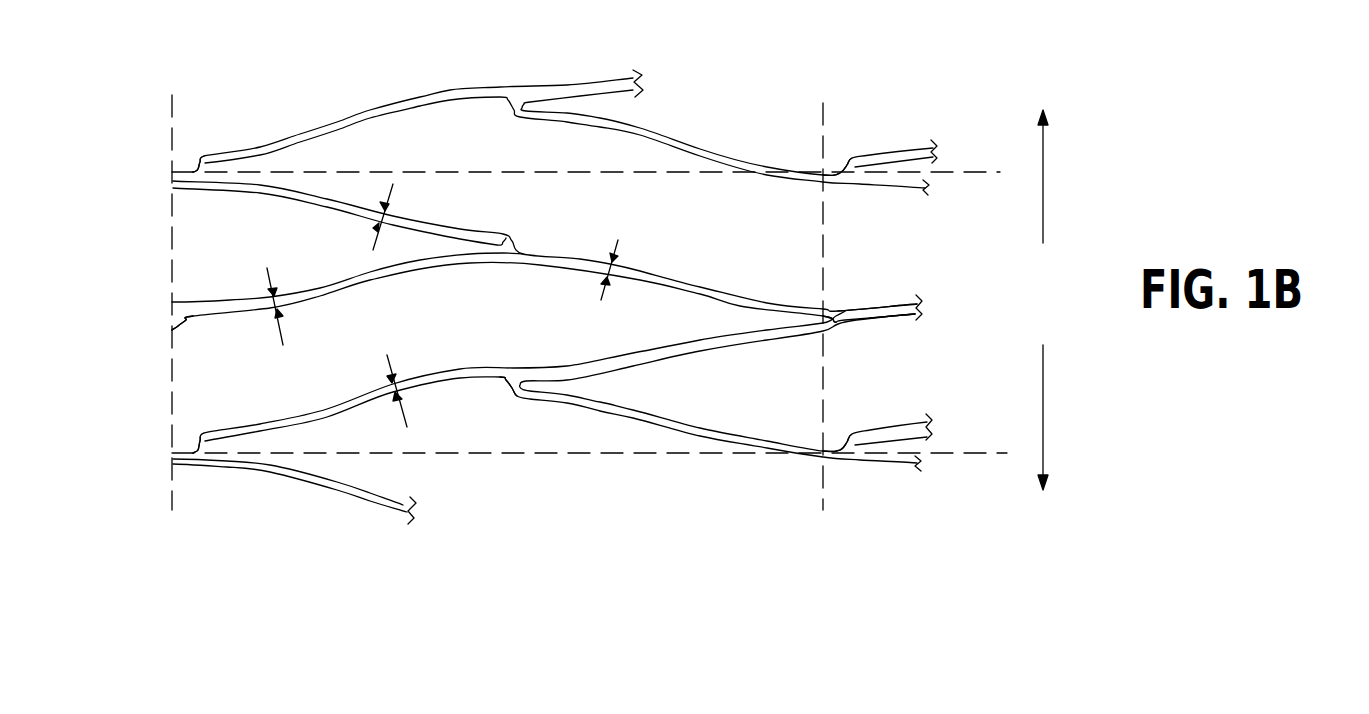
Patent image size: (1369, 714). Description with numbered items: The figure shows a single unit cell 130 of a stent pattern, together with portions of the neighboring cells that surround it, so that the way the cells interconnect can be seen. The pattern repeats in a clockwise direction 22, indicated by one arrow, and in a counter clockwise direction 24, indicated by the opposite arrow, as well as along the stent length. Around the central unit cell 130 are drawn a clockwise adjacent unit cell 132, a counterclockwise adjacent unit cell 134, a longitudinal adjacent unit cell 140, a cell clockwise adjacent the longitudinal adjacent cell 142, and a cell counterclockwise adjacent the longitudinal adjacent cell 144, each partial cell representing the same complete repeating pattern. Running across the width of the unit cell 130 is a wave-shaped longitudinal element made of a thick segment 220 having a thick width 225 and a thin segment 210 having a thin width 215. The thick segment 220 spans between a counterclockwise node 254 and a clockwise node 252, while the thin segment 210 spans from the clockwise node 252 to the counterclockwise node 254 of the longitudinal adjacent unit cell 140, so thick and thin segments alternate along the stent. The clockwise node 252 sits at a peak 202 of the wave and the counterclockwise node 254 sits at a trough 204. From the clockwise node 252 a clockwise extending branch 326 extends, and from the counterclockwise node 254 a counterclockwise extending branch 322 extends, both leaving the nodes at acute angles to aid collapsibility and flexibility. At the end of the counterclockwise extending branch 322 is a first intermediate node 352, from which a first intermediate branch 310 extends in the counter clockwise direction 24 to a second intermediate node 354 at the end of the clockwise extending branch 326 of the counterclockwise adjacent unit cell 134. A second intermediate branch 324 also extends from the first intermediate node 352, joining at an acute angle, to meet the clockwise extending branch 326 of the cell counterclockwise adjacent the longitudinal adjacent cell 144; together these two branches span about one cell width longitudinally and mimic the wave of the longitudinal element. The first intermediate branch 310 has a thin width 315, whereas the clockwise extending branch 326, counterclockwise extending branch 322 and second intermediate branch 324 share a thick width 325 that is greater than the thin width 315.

The clockwise direction 22 is at (1044, 178).
The counter clockwise direction 24 is at (1044, 400).
The unit cell 130 is at (768, 225).
The clockwise adjacent unit cell 132 is at (281, 101).
The counterclockwise adjacent unit cell 134 is at (288, 504).
The longitudinal adjacent unit cell 140 is at (960, 225).
The cell clockwise adjacent the longitudinal adjacent cell 142 is at (910, 106).
The cell counterclockwise adjacent the longitudinal adjacent cell 144 is at (895, 504).
The peak 202 is at (507, 258).
The trough 204 is at (838, 310).
The thin segment 210 is at (698, 288).
The thin width 215 is at (619, 254).
The thick segment 220 is at (917, 316).
The thick width 225 is at (262, 292).
The clockwise node 252 is at (505, 233).
The counterclockwise node 254 is at (184, 333).
The first intermediate branch 310 is at (409, 103).
The thin width 315 is at (381, 373).
The counterclockwise extending branch 322 is at (719, 345).
The second intermediate branch 324 is at (688, 148).
The thick width 325 is at (392, 190).
The clockwise extending branch 326 is at (348, 208).
The first intermediate node 352 is at (513, 368).
The second intermediate node 354 is at (198, 160).